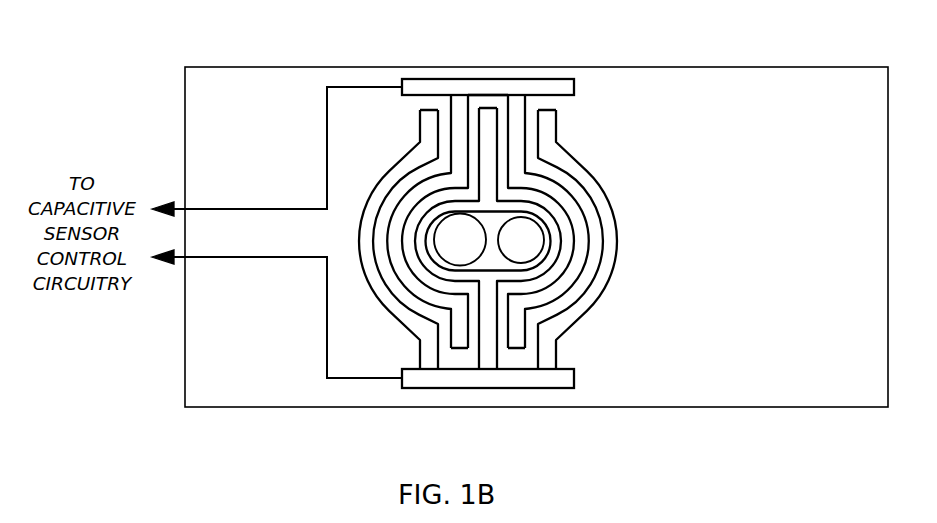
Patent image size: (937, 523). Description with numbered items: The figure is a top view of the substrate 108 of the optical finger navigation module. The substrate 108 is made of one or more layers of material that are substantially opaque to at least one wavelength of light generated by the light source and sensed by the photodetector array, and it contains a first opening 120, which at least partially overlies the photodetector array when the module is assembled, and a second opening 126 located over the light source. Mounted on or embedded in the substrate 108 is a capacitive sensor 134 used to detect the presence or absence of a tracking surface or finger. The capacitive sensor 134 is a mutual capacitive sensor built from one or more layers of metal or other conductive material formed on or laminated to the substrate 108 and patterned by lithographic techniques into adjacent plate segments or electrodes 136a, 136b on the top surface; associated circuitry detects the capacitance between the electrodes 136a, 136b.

The capacitive sensor 134 is at (403, 53).
The electrode 136a is at (574, 87).
The electrode 136b is at (574, 378).
The substrate 108 is at (752, 171).
The first opening 120 is at (447, 248).
The second opening 126 is at (509, 248).